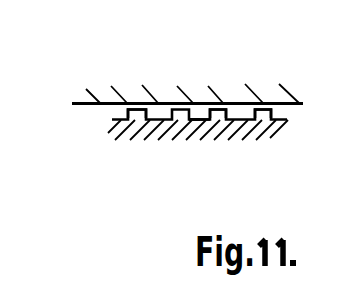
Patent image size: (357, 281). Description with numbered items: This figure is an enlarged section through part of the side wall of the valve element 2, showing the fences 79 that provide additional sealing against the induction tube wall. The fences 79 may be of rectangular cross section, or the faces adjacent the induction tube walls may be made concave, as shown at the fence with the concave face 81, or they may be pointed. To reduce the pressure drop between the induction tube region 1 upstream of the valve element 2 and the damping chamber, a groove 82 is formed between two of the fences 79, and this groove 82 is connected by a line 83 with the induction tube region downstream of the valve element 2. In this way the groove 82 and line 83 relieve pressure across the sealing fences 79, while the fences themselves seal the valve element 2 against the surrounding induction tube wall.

The induction tube region 1 is at (110, 99).
The valve element 2 is at (143, 125).
The fences 79 is at (136, 110).
The concave face 81 is at (263, 104).
The groove 82 is at (199, 118).
The line 83 is at (199, 120).